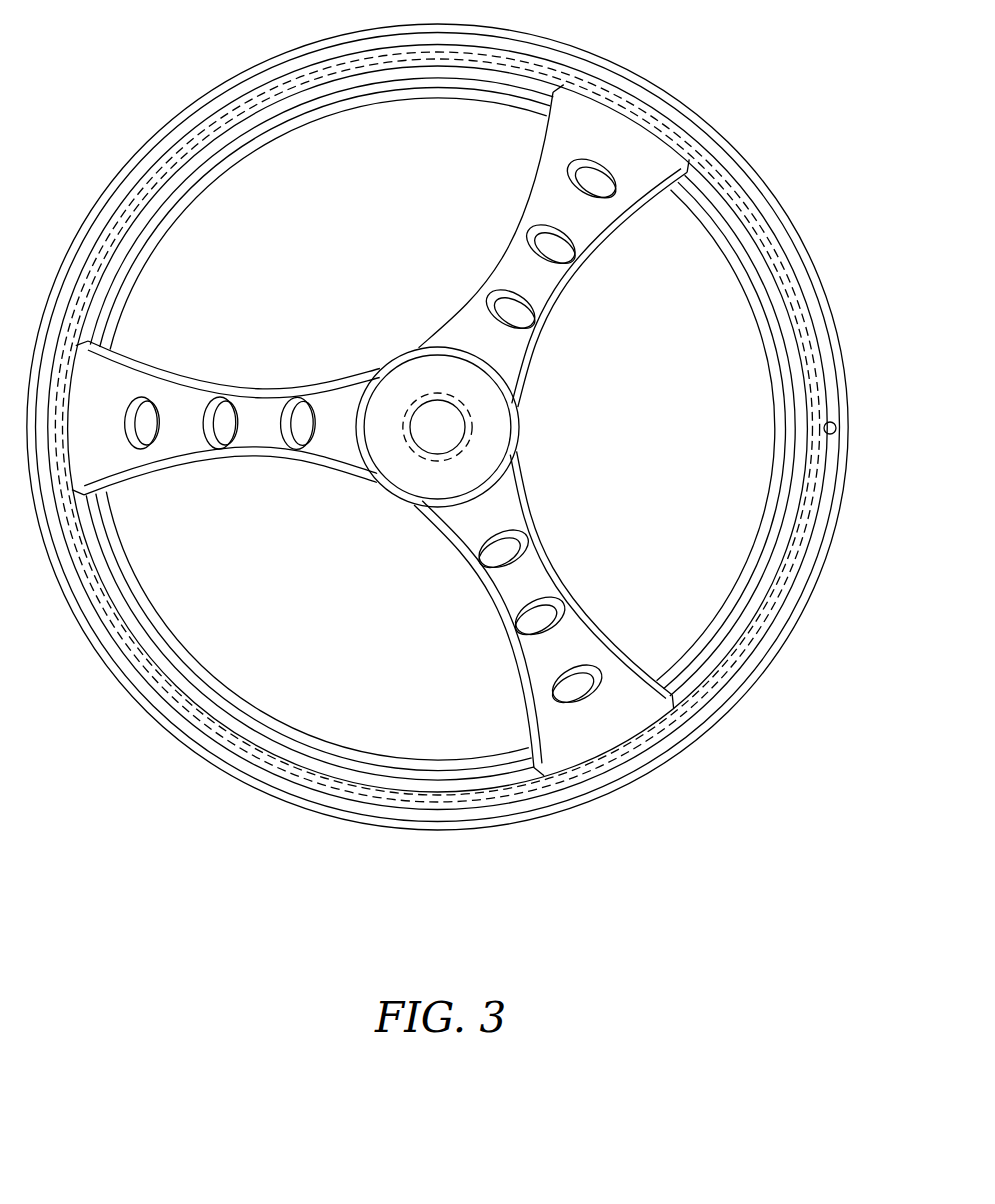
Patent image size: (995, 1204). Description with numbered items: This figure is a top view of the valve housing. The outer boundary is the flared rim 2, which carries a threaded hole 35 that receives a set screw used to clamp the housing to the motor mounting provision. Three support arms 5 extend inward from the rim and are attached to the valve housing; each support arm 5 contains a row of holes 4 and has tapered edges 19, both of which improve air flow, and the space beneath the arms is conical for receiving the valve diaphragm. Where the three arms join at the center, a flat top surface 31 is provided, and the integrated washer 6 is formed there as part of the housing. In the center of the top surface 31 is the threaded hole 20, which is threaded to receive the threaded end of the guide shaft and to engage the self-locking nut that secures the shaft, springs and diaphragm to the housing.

The flared rim 2 is at (648, 86).
The holes in support arm 4 is at (498, 552).
The support arm 5 is at (246, 378).
The integrated washer 6 is at (494, 432).
The tapered edge 19 is at (547, 365).
The threaded hole for shaft 20 is at (428, 432).
The top of valve housing 31 is at (438, 351).
The threaded hole for set screw 35 is at (822, 424).